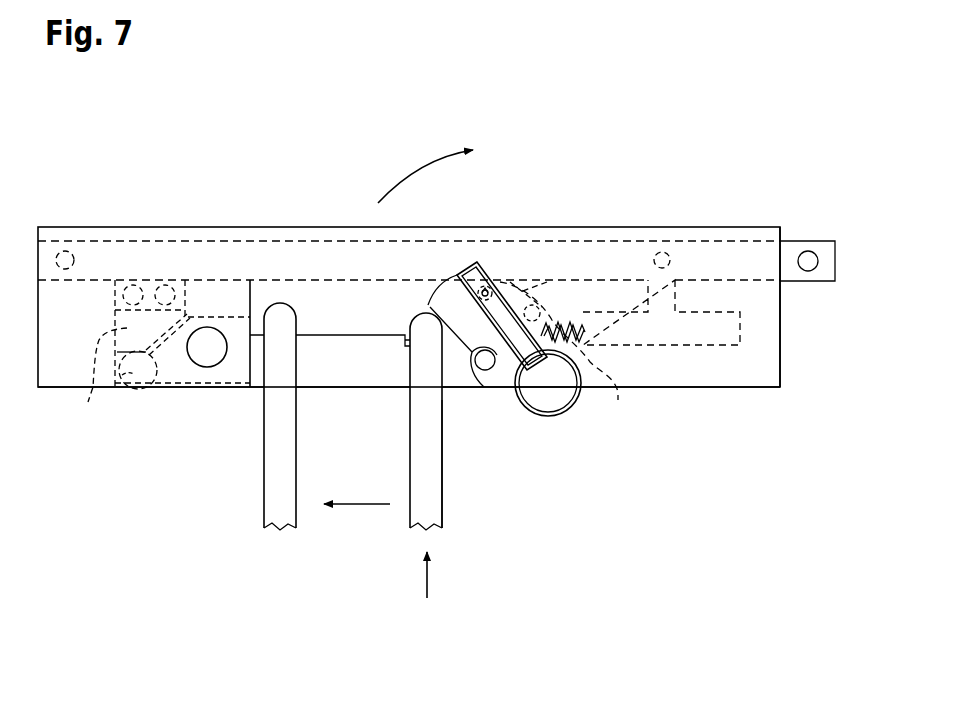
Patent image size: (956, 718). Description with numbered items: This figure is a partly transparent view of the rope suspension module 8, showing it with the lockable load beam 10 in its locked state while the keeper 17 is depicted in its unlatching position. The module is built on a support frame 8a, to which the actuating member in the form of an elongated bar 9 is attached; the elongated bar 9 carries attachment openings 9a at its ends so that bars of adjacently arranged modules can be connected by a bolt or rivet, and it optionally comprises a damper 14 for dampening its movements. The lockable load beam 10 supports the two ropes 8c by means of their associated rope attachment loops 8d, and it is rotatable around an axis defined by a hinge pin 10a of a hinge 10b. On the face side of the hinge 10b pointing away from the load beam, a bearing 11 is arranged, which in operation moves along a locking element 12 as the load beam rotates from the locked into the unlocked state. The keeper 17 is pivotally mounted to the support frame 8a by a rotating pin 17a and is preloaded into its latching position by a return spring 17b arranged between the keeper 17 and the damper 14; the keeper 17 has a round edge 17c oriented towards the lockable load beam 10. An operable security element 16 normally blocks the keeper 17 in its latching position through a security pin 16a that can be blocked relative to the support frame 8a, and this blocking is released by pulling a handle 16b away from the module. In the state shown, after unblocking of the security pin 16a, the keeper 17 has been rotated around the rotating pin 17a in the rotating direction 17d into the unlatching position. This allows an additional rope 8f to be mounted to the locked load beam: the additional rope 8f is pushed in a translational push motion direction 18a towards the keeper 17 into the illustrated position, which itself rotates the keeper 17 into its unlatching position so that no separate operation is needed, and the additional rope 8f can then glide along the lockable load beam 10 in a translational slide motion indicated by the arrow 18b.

The rope suspension module 8 is at (112, 185).
The support frame 8a is at (752, 382).
The ropes 8c is at (465, 523).
The rope attachment loops 8d is at (262, 398).
The additional rope 8f is at (447, 489).
The elongated bar 9 is at (797, 250).
The attachment openings 9a is at (810, 258).
The lockable load beam 10 is at (352, 380).
The hinge pin 10a is at (207, 352).
The hinge 10b is at (161, 362).
The bearing 11 is at (113, 388).
The locking element 12 is at (89, 400).
The damper 14 is at (703, 333).
The operable security element 16 is at (463, 256).
The security pin 16a is at (490, 271).
The handle 16b is at (542, 372).
The keeper 17 is at (548, 282).
The rotating pin 17a is at (473, 382).
The return spring 17b is at (592, 360).
The round edge 17c is at (428, 305).
The rotating direction 17d is at (410, 166).
The translational push motion direction 18a is at (428, 582).
The translational slide motion 18b is at (362, 506).